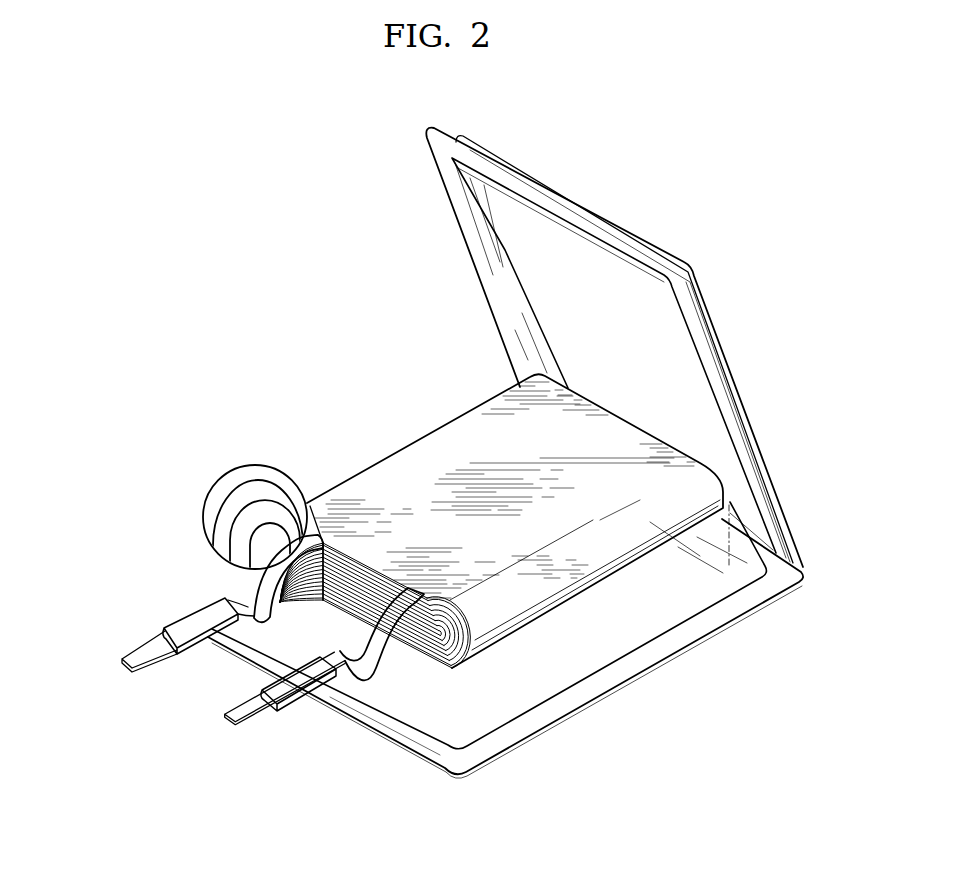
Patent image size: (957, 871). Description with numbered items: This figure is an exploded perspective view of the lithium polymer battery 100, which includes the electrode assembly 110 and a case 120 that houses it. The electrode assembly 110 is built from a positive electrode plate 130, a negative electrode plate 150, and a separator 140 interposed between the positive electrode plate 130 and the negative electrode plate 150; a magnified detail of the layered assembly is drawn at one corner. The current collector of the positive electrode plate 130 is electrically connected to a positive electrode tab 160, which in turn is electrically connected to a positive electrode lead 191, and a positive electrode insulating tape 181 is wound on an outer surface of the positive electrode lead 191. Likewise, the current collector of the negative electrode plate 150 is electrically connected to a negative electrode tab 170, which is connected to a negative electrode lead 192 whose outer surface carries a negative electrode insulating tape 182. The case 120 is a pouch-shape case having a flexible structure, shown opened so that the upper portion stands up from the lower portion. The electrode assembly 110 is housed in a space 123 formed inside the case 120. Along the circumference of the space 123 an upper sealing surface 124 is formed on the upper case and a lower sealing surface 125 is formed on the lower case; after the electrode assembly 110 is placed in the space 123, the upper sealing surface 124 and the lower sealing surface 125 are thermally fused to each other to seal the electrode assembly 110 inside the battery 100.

The lithium polymer battery 100 is at (388, 380).
The electrode assembly 110 is at (274, 564).
The case 120 is at (658, 710).
The space 123 is at (692, 597).
The upper sealing surface 124 is at (712, 358).
The lower sealing surface 125 is at (447, 758).
The positive electrode plate 130 is at (270, 553).
The separator 140 is at (236, 496).
The negative electrode plate 150 is at (240, 531).
The positive electrode tab 160 is at (301, 548).
The negative electrode tab 170 is at (412, 594).
The positive electrode insulating tape 181 is at (166, 630).
The negative electrode insulating tape 182 is at (312, 690).
The positive electrode lead 191 is at (127, 672).
The negative electrode lead 192 is at (235, 722).